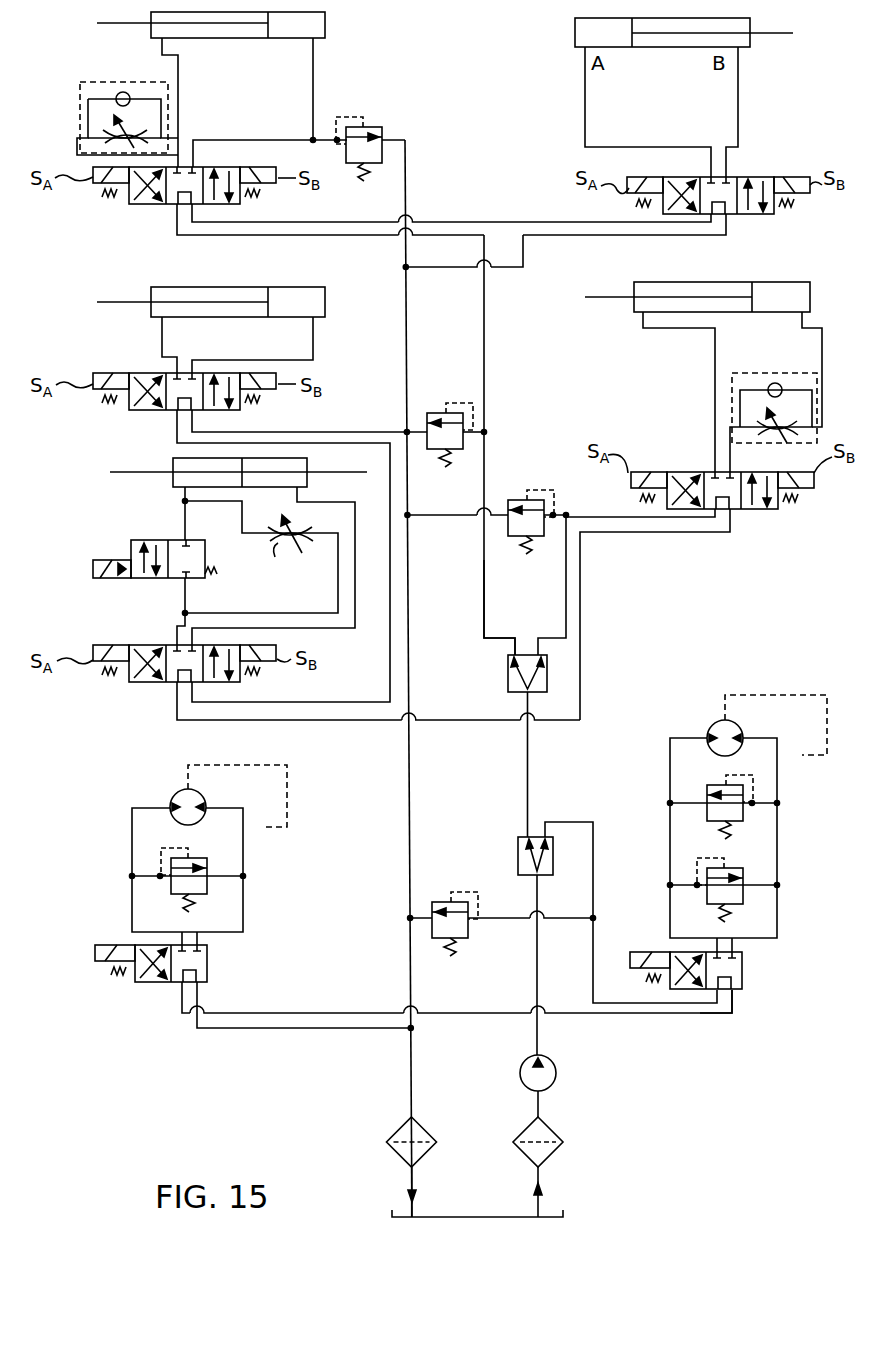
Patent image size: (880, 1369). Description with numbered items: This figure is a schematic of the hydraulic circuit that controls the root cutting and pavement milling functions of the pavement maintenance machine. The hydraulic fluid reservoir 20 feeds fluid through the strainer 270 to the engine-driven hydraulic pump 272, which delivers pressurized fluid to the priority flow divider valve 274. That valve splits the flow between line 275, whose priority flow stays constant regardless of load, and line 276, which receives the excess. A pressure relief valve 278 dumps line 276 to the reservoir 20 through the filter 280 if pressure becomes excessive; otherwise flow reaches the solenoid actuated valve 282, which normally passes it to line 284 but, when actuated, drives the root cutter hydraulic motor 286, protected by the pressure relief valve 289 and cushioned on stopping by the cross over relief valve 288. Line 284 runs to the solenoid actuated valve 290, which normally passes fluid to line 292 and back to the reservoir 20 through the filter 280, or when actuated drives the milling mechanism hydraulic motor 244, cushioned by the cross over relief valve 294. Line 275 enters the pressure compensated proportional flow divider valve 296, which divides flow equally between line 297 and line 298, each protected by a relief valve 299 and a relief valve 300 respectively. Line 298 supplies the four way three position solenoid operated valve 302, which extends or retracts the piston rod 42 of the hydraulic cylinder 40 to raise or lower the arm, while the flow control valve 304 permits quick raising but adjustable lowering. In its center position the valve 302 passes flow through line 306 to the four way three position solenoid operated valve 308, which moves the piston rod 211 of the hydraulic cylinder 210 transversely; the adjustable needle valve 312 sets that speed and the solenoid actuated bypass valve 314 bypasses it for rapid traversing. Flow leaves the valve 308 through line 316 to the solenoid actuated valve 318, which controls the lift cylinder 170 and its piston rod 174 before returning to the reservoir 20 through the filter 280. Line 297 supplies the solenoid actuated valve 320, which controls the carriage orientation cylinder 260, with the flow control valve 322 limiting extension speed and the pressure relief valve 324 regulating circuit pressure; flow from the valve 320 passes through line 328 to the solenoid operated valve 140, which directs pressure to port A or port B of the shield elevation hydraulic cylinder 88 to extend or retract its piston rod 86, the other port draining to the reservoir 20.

The hydraulic fluid reservoir 20 is at (293, 830).
The hydraulic cylinder 40 is at (798, 282).
The piston rod 42 is at (616, 296).
The piston rod 86 is at (783, 34).
The hydraulic cylinder 88 is at (571, 34).
The four way three position solenoid operated valve 140 is at (763, 214).
The hydraulic cylinder 170 is at (315, 285).
The piston rod 174 is at (135, 302).
The hydraulic cylinder 210 is at (182, 457).
The piston rod 211 is at (128, 472).
The milling mechanism hydraulic motor 244 is at (182, 790).
The carriage orientation cylinder 260 is at (328, 26).
The strainer 270 is at (558, 1132).
The hydraulic pump 272 is at (558, 1070).
The priority flow divider valve 274 is at (518, 865).
The line 275 is at (530, 780).
The line 276 is at (572, 822).
The pressure relief valve 278 is at (468, 928).
The filter 280 is at (403, 1126).
The solenoid actuated valve 282 is at (745, 968).
The line 284 is at (683, 1018).
The root cutter hydraulic motor 286 is at (722, 722).
The cross over relief valve 288 is at (733, 867).
The pressure relief valve 289 is at (722, 785).
The solenoid actuated valve 290 is at (210, 958).
The line 292 is at (229, 1030).
The cross over relief valve 294 is at (225, 850).
The proportional flow divider valve 296 is at (508, 678).
The line 297 is at (484, 590).
The line 298 is at (565, 606).
The relief valve 299 is at (422, 413).
The relief valve 300 is at (514, 498).
The four way three position solenoid operated valve 302 is at (696, 472).
The flow control valve 304 is at (797, 373).
The line 306 is at (584, 684).
The four way three position solenoid operated valve 308 is at (153, 645).
The adjustable needle valve 312 is at (281, 552).
The solenoid actuated bypass valve 314 is at (140, 578).
The line 316 is at (328, 702).
The four way three position solenoid actuated valve 318 is at (152, 373).
The four way three position solenoid actuated valve 320 is at (152, 204).
The flow control valve 322 is at (80, 100).
The pressure relief valve 324 is at (384, 128).
The line 328 is at (451, 222).